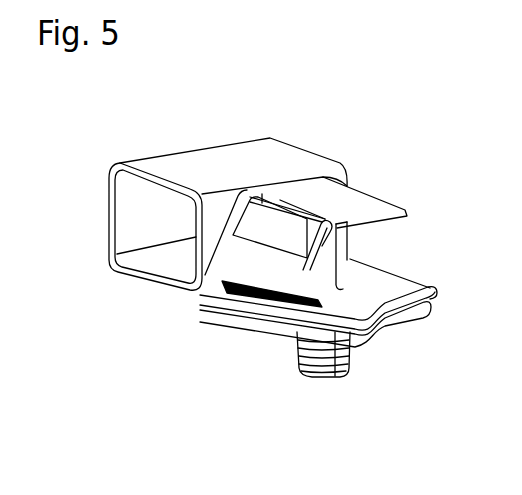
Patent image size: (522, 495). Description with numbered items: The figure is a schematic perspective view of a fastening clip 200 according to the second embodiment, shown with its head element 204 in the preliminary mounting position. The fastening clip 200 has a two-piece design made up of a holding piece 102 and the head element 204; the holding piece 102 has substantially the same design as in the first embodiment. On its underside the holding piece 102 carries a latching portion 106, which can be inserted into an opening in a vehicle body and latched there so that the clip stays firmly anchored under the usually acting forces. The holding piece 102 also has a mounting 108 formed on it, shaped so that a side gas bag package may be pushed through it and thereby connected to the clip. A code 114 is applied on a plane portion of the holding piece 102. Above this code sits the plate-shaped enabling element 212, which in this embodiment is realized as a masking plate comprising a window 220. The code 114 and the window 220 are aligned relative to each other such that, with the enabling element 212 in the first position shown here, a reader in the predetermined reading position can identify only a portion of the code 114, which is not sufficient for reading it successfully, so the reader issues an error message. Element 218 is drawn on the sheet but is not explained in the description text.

The fastening clip 200 is at (278, 76).
The holding piece 102 is at (138, 281).
The mounting 108 is at (122, 217).
The enabling element 212 is at (228, 256).
The window 220 is at (273, 223).
The top tongue plate 218 is at (341, 198).
The head element 204 is at (336, 261).
The code 114 is at (290, 300).
The latching portion 106 is at (348, 368).